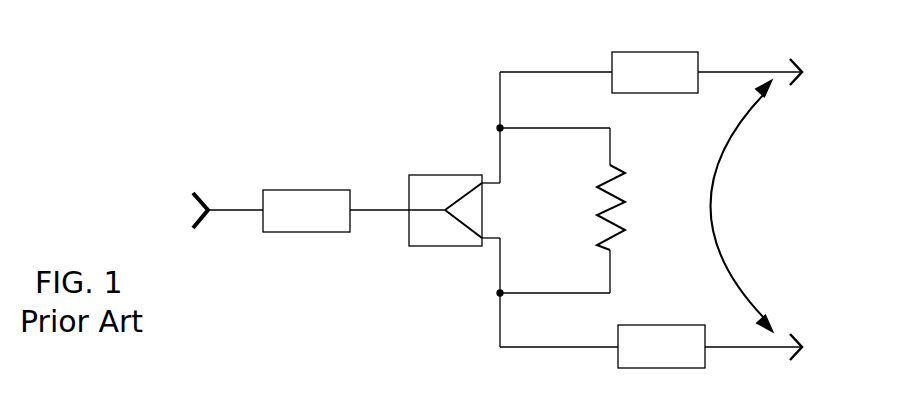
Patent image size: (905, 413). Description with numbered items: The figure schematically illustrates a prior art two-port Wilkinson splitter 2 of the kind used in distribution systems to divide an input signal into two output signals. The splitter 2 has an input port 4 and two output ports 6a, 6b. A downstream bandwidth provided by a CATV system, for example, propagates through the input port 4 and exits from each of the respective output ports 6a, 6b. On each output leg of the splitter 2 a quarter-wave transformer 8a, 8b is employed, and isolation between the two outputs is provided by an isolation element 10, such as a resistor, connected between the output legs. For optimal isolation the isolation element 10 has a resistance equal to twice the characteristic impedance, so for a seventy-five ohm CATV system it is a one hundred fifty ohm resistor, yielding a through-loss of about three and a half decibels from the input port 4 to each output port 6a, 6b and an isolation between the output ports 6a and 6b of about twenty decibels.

The splitter 2 is at (425, 45).
The input port 4 is at (237, 210).
The output port 6a is at (735, 72).
The output port 6b is at (747, 347).
The quarter-wave transformer 8a is at (466, 191).
The quarter-wave transformer 8b is at (462, 227).
The isolation element 10 is at (619, 167).